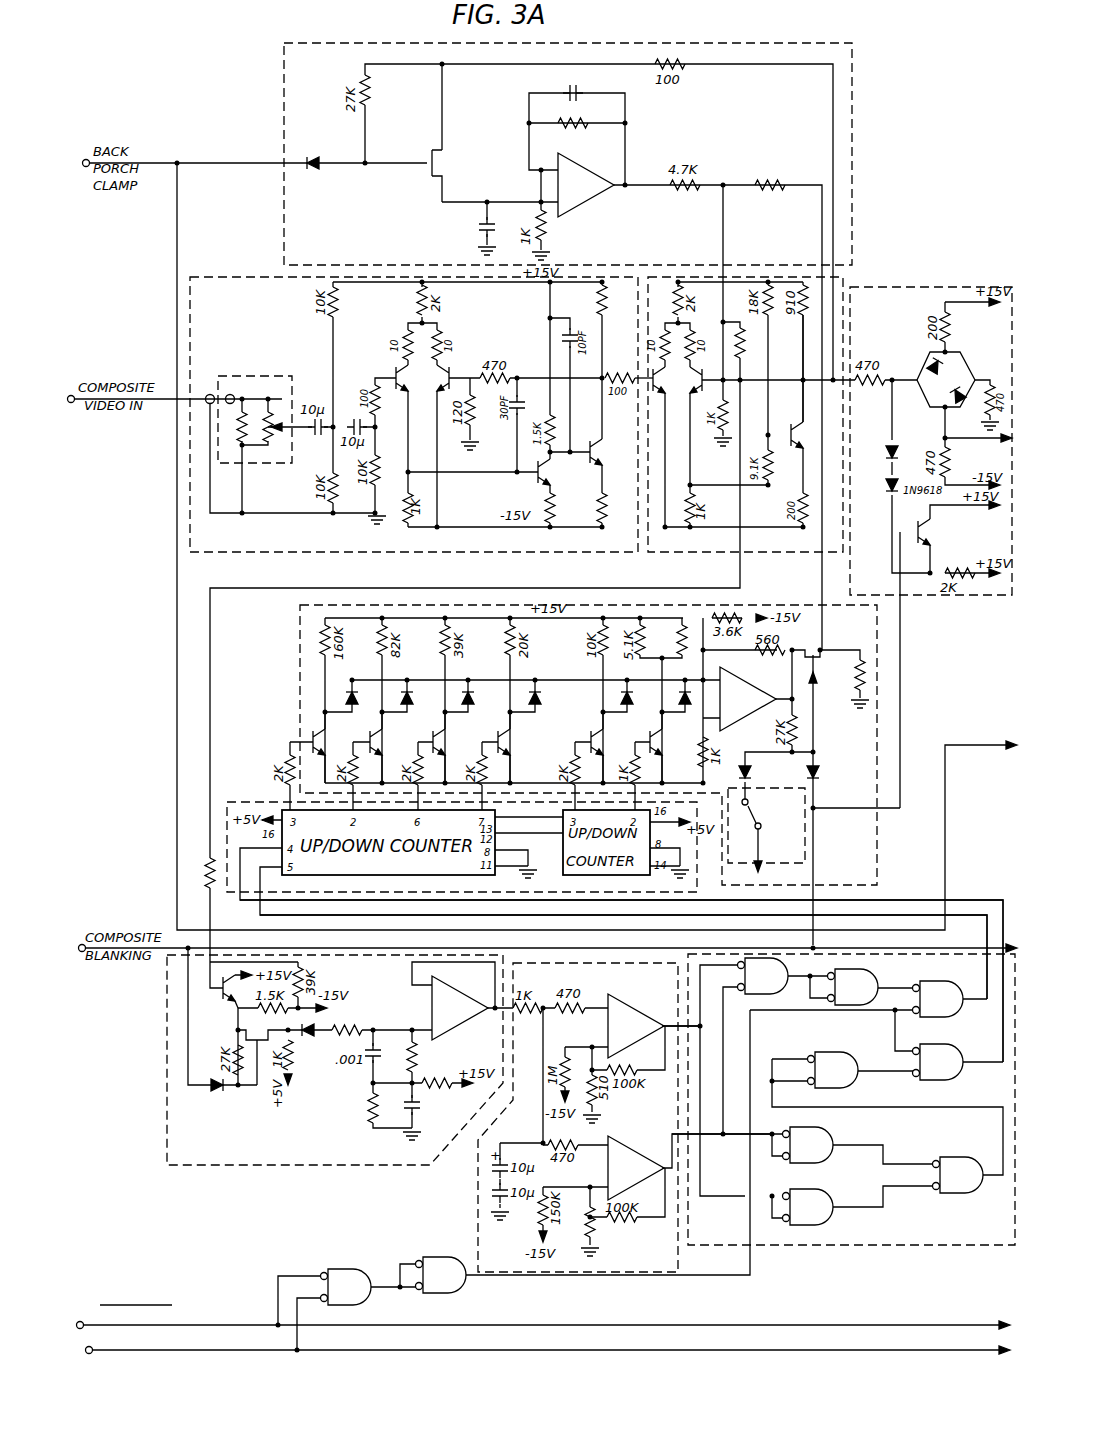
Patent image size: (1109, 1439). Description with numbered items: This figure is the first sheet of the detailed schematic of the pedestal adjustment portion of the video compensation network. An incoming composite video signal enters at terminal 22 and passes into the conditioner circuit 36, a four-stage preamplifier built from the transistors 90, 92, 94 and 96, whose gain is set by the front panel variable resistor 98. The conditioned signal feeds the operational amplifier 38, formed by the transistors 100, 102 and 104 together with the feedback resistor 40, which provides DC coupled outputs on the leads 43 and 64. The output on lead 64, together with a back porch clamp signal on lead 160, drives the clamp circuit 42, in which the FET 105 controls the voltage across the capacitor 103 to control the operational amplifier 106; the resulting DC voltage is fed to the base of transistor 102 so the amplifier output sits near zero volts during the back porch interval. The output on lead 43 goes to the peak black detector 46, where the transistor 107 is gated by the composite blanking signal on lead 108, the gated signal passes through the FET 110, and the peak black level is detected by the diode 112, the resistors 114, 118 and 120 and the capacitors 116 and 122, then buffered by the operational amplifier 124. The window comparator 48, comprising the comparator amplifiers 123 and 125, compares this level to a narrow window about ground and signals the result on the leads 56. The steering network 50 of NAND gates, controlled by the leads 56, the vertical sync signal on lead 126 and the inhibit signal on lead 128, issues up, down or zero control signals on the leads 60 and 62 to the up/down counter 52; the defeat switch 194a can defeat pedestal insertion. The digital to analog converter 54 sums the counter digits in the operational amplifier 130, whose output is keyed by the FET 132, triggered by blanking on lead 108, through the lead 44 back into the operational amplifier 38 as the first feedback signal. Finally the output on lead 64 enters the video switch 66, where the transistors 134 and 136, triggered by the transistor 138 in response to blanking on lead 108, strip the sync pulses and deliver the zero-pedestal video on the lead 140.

The terminal 22 is at (182, 410).
The conditioner circuit 36 is at (258, 273).
The operational amplifier 38 is at (688, 562).
The feedback resistor 40 is at (742, 352).
The clamp circuit 42 is at (284, 78).
The lead 43 is at (210, 722).
The lead 44 is at (822, 232).
The peak black detector 46 is at (246, 1168).
The window comparator 48 is at (478, 1226).
The steering network 50 is at (906, 1248).
The up/down counter 52 is at (262, 800).
The digital to analog converter 54 is at (300, 680).
The leads 56 is at (669, 1024).
The lead 60 is at (955, 900).
The lead 62 is at (881, 914).
The lead 64 is at (806, 384).
The video switch 66 is at (926, 287).
The transistor 90 is at (386, 372).
The transistor 92 is at (456, 370).
The transistor 94 is at (602, 452).
The transistor 96 is at (529, 478).
The variable resistor 98 is at (282, 416).
The transistor 100 is at (660, 370).
The transistor 102 is at (710, 384).
The capacitor 103 is at (512, 220).
The transistor 104 is at (809, 439).
The FET 105 is at (426, 168).
The operational amplifier 106 is at (675, 361).
The transistor 107 is at (221, 998).
The lead 108 is at (264, 946).
The FET 110 is at (256, 1032).
The diode 112 is at (310, 1036).
The resistor 114 is at (347, 1025).
The capacitor 116 is at (374, 1052).
The resistor 118 is at (360, 1112).
The resistor 120 is at (416, 1074).
The capacitor 122 is at (418, 1102).
The comparator amplifier 123 is at (636, 1026).
The operational amplifier 124 is at (462, 1001).
The comparator amplifier 125 is at (636, 1168).
The lead 126 is at (228, 1354).
The lead 128 is at (250, 1322).
The operational amplifier 130 is at (746, 682).
The FET 132 is at (818, 674).
The transistor 134 is at (946, 367).
The transistor 136 is at (946, 393).
The transistor 138 is at (928, 532).
The lead 140 is at (967, 438).
The lead 160 is at (212, 172).
The defeat switch 194a is at (805, 834).